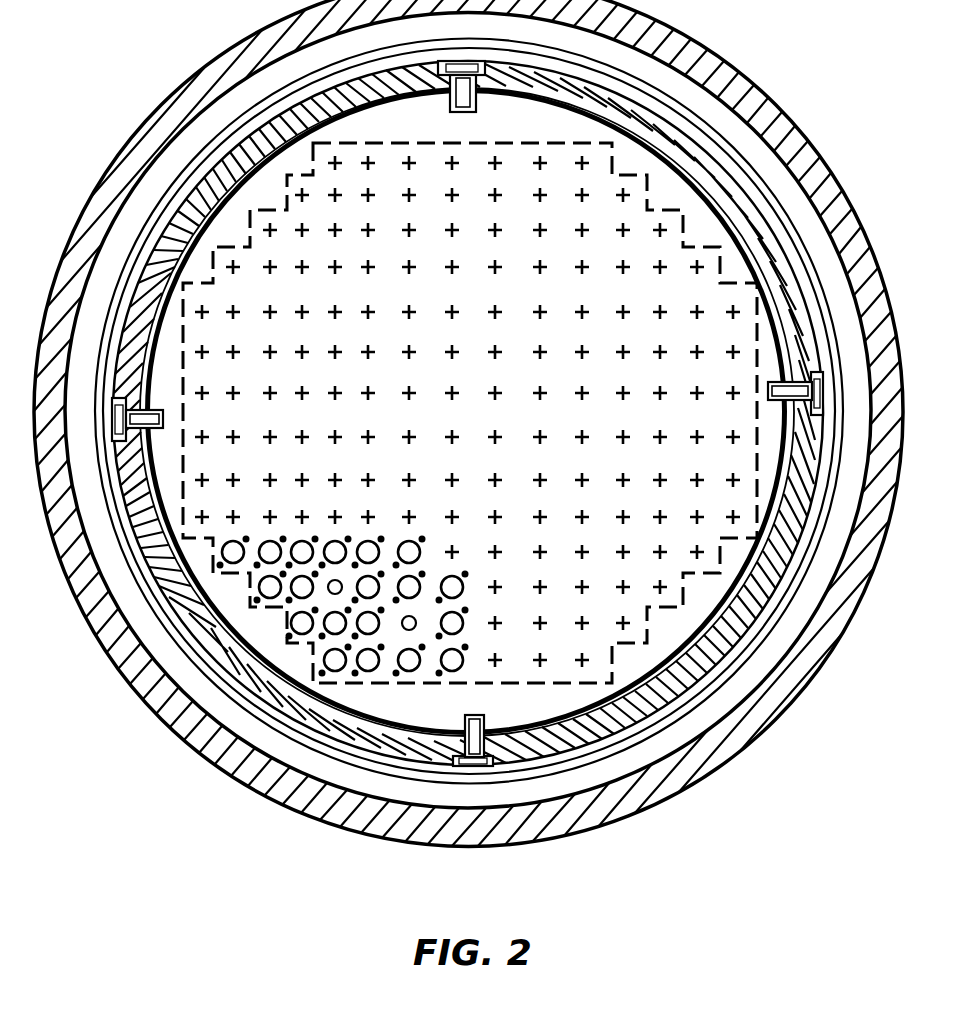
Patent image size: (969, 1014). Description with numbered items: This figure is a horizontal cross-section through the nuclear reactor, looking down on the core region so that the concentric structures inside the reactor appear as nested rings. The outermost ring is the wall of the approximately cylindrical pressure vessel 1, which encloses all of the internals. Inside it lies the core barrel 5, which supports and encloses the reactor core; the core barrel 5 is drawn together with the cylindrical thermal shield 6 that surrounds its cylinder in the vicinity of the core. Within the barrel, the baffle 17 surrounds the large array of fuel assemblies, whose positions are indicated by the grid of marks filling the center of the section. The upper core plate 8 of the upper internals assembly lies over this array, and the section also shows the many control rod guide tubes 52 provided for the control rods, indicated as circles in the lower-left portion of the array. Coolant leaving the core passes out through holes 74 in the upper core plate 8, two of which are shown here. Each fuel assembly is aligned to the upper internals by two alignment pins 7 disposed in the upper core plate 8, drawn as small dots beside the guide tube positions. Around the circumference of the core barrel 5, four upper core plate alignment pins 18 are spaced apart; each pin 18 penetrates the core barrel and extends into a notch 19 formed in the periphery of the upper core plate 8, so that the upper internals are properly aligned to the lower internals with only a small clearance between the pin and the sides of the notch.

The pressure vessel 1 is at (807, 140).
The core barrel 5 is at (787, 530).
The thermal shield 6 is at (846, 195).
The alignment pins 7 is at (357, 676).
The upper core plate 8 is at (630, 678).
The baffle 17 is at (436, 685).
The upper core plate alignment pins 18 is at (468, 73).
The notch 19 is at (476, 103).
The control rod guide tubes 52 is at (463, 668).
The holes 74 is at (342, 579).